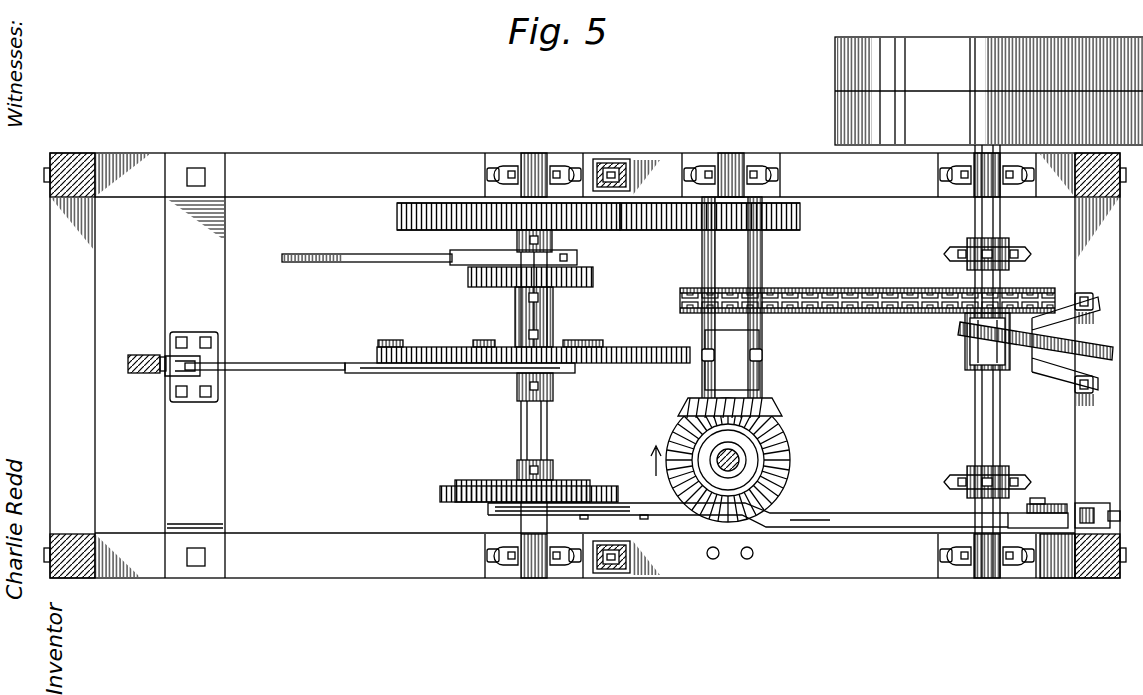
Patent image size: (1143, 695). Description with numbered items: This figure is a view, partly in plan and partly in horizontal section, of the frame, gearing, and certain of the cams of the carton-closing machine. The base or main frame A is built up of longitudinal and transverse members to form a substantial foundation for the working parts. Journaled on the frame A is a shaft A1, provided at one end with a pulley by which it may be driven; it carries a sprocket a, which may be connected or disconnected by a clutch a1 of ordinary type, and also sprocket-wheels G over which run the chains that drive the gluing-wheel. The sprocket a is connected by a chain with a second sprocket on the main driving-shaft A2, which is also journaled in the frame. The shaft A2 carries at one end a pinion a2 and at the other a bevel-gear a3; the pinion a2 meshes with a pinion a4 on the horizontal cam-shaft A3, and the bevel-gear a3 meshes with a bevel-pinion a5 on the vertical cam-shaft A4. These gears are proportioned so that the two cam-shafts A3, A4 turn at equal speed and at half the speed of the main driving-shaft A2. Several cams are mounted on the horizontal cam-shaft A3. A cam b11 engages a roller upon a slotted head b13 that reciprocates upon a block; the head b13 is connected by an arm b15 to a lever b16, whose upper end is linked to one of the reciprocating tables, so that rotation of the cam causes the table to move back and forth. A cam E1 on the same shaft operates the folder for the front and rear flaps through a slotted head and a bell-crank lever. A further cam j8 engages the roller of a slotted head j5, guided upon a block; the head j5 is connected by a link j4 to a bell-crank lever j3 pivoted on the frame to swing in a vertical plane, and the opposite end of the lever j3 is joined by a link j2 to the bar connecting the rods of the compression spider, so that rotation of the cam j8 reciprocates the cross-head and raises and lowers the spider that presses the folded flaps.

The base or main frame A is at (585, 365).
The shaft A1 is at (973, 418).
The main driving-shaft A2 is at (764, 258).
The horizontal cam-shaft A3 is at (520, 431).
The vertical cam-shaft A4 is at (730, 472).
The sprocket a is at (1052, 298).
The clutch a1 is at (1008, 362).
The pinion a2 is at (803, 217).
The bevel-gear a3 is at (785, 417).
The pinion a4 is at (395, 218).
The bevel-pinion a5 is at (790, 462).
The cam b11 is at (443, 345).
The slotted head b13 is at (438, 376).
The arm b15 is at (292, 373).
The lever b16 is at (145, 375).
The cam E1 is at (594, 278).
The sprocket-wheels G is at (1027, 254).
The link j2 is at (1040, 504).
The bell-crank lever j3 is at (1062, 524).
The link j4 is at (826, 525).
The slotted head j5 is at (622, 500).
The cam j8 is at (438, 497).